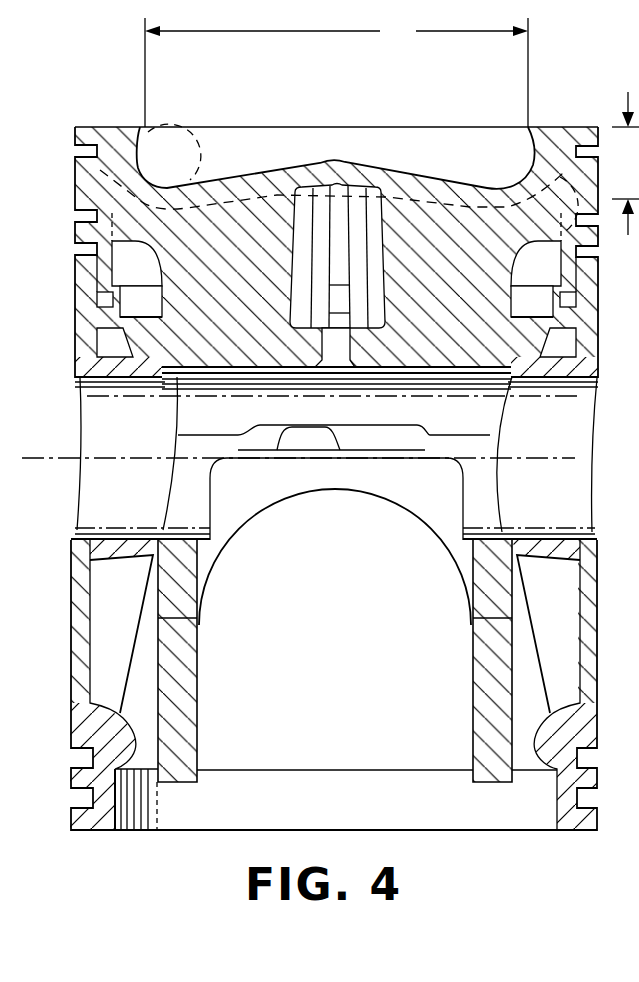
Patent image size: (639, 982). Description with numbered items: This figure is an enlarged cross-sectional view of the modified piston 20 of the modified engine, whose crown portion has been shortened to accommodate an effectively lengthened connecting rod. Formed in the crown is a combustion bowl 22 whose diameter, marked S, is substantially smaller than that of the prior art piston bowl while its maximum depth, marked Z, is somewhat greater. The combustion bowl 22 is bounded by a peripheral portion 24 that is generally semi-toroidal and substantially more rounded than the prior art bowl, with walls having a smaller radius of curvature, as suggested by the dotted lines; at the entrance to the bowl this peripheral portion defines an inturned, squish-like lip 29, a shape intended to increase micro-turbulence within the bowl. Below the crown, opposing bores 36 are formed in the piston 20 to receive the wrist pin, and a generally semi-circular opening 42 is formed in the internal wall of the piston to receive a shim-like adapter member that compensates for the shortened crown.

The modified piston 20 is at (330, 422).
The combustion bowl 22 is at (328, 155).
The peripheral portion 24 is at (147, 180).
The squish-like lip 29 is at (530, 137).
The opposing bores 36 is at (102, 380).
The semi-circular opening 42 is at (423, 368).